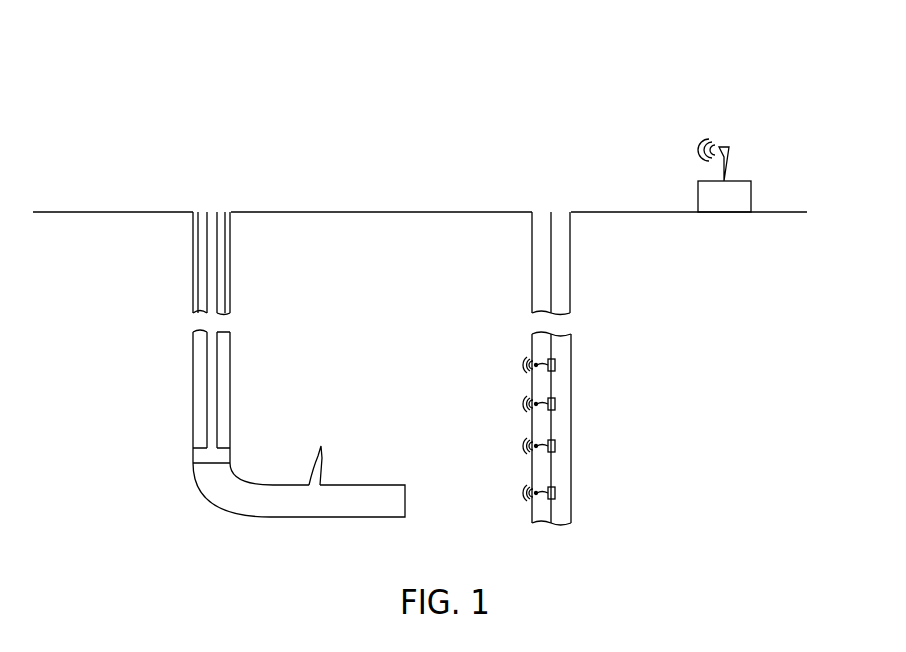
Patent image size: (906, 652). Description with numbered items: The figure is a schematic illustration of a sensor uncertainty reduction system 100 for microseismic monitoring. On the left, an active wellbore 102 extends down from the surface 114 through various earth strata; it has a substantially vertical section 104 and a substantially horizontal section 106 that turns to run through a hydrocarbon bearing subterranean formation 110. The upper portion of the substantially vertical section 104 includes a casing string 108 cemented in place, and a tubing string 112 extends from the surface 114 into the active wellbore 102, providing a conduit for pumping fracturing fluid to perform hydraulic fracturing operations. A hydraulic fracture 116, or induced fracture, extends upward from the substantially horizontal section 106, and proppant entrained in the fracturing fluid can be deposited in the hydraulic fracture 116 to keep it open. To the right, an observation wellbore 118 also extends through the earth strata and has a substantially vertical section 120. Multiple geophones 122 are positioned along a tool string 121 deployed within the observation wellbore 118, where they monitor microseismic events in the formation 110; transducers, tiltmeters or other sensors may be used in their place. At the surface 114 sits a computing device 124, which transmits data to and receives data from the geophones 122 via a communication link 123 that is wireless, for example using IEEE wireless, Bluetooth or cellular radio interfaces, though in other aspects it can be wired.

The sensor uncertainty reduction system 100 is at (601, 60).
The active wellbore 102 is at (193, 272).
The substantially vertical section 104 is at (193, 385).
The substantially horizontal section 106 is at (390, 485).
The casing string 108 is at (232, 235).
The hydrocarbon bearing subterranean formation 110 is at (281, 386).
The tubing string 112 is at (215, 278).
The surface 114 is at (445, 212).
The hydraulic fracture 116 is at (318, 448).
The observation wellbore 118 is at (570, 255).
The substantially vertical section 120 is at (571, 355).
The tool string 121 is at (551, 284).
The geophones 122 is at (556, 367).
The communication link 123 is at (538, 362).
The computing device 124 is at (712, 206).